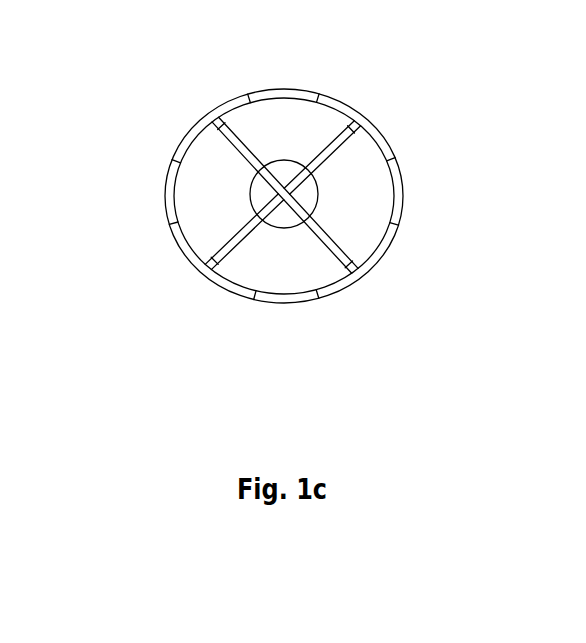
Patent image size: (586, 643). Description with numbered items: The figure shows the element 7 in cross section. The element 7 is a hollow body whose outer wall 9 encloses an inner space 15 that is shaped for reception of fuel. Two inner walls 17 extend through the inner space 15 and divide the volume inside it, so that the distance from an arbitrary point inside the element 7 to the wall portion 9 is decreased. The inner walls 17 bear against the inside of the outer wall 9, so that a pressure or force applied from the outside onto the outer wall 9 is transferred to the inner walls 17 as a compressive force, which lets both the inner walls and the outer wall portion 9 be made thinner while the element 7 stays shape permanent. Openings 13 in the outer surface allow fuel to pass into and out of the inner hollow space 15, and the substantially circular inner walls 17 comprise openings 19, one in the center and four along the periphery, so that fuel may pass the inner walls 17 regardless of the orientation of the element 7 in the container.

The element 7 is at (200, 120).
The outer wall 9 is at (228, 107).
The openings 13 is at (318, 198).
The inner space 15 is at (268, 260).
The inner walls 17 is at (325, 150).
The openings 19 is at (273, 199).